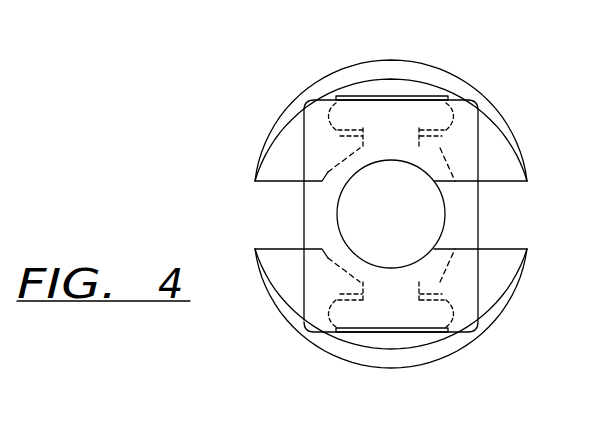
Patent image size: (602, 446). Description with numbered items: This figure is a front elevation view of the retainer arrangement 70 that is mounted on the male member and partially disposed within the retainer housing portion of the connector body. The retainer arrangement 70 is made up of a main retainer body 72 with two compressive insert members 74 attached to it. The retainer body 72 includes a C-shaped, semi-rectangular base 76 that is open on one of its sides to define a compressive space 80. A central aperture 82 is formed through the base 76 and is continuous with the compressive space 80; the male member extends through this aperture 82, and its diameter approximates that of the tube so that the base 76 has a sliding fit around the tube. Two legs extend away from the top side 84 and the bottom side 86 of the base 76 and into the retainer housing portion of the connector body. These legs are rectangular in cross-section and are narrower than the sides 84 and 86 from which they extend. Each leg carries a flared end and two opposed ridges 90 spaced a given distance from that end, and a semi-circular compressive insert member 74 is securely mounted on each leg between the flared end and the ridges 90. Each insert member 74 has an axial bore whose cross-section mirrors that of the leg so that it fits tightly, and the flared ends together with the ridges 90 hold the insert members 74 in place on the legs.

The retainer arrangement 70 is at (543, 87).
The main retainer body 72 is at (298, 276).
The compressive insert member 74 is at (490, 173).
The base 76 is at (316, 128).
The compressive space 80 is at (458, 182).
The central aperture 82 is at (347, 196).
The top side 84 is at (452, 126).
The bottom side 86 is at (452, 327).
The ridges 90 is at (366, 96).